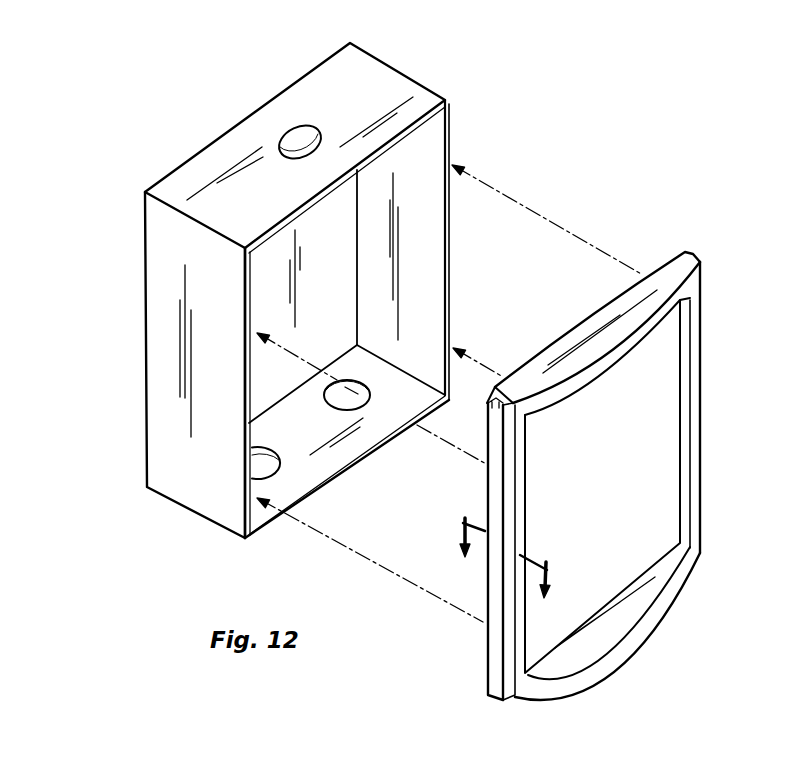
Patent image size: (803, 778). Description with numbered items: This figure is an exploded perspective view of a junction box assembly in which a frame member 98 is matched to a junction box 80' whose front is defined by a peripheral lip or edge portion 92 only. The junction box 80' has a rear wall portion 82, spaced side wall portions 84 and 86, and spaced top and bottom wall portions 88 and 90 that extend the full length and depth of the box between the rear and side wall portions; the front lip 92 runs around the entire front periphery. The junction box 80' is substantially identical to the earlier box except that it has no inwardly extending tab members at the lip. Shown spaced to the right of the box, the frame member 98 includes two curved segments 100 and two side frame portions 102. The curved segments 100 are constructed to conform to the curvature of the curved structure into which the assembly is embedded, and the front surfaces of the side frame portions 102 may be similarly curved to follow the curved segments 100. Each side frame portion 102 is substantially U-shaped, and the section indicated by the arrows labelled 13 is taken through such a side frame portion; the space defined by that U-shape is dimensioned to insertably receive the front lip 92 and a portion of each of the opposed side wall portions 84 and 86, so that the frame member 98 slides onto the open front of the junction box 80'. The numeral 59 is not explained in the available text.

The junction box 80' is at (270, 280).
The wall 59 is at (0, 457).
The rear wall portion 82 is at (170, 174).
The side wall portion 84 is at (170, 404).
The side wall portion 86 is at (422, 141).
The top wall portion 88 is at (377, 80).
The bottom wall portion 90 is at (338, 468).
The front lip or edge portion 92 is at (447, 272).
The frame member 98 is at (740, 217).
The curved segment 100 is at (596, 380).
The side frame portion 102 is at (700, 383).
The section line for FIG. 13 is at (502, 556).